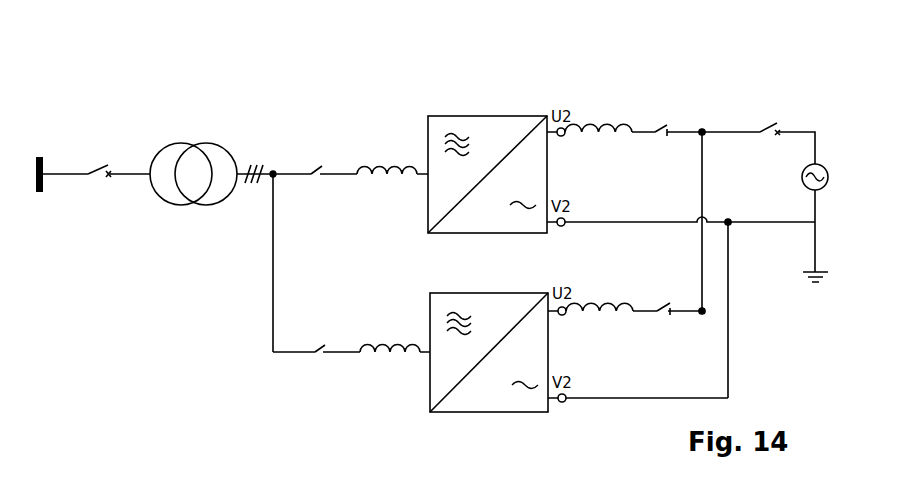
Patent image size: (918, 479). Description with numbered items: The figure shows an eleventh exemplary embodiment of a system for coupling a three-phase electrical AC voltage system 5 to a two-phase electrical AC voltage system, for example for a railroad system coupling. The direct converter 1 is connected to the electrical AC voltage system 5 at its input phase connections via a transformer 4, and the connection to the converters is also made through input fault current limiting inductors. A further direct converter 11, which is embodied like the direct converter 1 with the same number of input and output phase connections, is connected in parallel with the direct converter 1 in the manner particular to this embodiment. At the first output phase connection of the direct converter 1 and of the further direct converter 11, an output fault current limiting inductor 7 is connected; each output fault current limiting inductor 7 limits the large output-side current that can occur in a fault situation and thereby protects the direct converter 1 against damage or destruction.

The electrical AC voltage system 5 is at (44, 143).
The transformer 4 is at (205, 146).
The further direct converter 11 is at (432, 292).
The direct converter 1 is at (487, 115).
The output fault current limiting inductor 7 is at (595, 300).